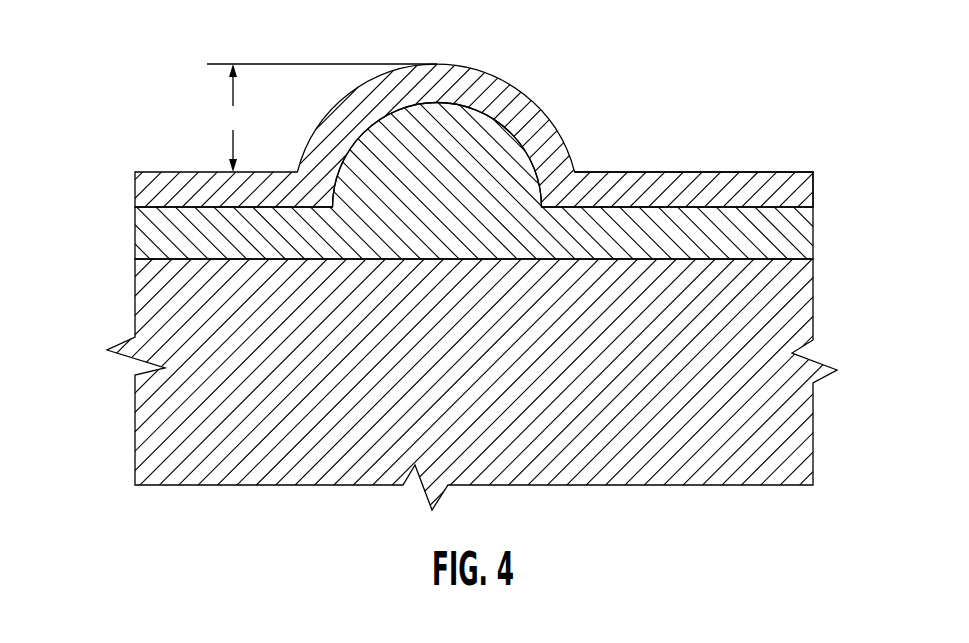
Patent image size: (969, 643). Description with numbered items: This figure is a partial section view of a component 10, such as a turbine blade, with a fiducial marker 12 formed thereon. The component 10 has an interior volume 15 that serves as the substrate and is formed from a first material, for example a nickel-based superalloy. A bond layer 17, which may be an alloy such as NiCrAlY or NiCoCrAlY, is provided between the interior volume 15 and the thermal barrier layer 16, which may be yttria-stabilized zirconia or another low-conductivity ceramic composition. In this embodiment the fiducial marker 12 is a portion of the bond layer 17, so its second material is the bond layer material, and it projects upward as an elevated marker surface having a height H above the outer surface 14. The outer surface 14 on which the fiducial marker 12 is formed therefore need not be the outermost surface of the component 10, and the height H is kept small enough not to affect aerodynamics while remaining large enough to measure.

The component 10 is at (80, 323).
The fiducial marker 12 is at (495, 155).
The outer surface 14 is at (770, 192).
The interior volume 15 is at (486, 379).
The thermal barrier layer 16 is at (700, 182).
The bond layer 17 is at (798, 243).